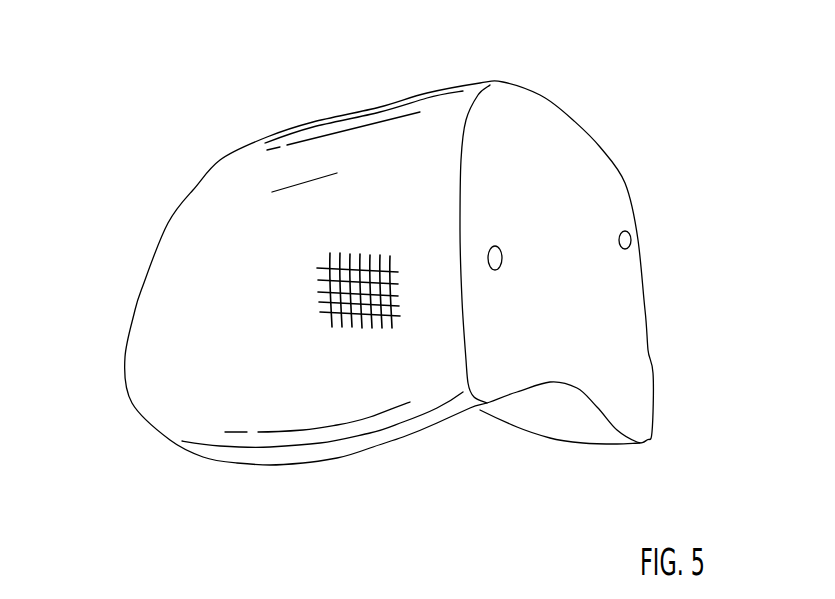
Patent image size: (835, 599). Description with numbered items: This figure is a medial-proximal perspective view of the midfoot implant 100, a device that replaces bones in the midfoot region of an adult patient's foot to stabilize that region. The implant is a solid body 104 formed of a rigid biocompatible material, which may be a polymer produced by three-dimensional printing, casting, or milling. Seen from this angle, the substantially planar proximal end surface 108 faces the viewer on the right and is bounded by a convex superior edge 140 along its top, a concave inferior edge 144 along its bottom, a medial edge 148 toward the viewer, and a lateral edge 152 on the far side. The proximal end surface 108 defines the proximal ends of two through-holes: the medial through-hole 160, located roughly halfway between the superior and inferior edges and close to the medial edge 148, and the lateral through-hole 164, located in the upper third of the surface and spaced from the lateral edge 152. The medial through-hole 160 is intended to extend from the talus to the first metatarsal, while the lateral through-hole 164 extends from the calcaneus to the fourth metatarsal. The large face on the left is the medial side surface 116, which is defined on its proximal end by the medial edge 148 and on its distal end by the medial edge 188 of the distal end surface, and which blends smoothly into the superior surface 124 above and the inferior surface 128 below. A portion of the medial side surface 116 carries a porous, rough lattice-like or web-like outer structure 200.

The midfoot implant 100 is at (177, 126).
The solid body 104 is at (183, 225).
The proximal end surface 108 is at (582, 183).
The medial side surface 116 is at (254, 322).
The superior surface 124 is at (422, 98).
The inferior surface 128 is at (531, 418).
The convex superior edge 140 is at (540, 95).
The concave inferior edge 144 is at (575, 388).
The medial edge 148 is at (462, 238).
The lateral edge 152 is at (653, 374).
The medial through-hole 160 is at (502, 259).
The lateral through-hole 164 is at (631, 238).
The medial edge 188 is at (145, 280).
The lattice-like outer structure 200 is at (377, 344).